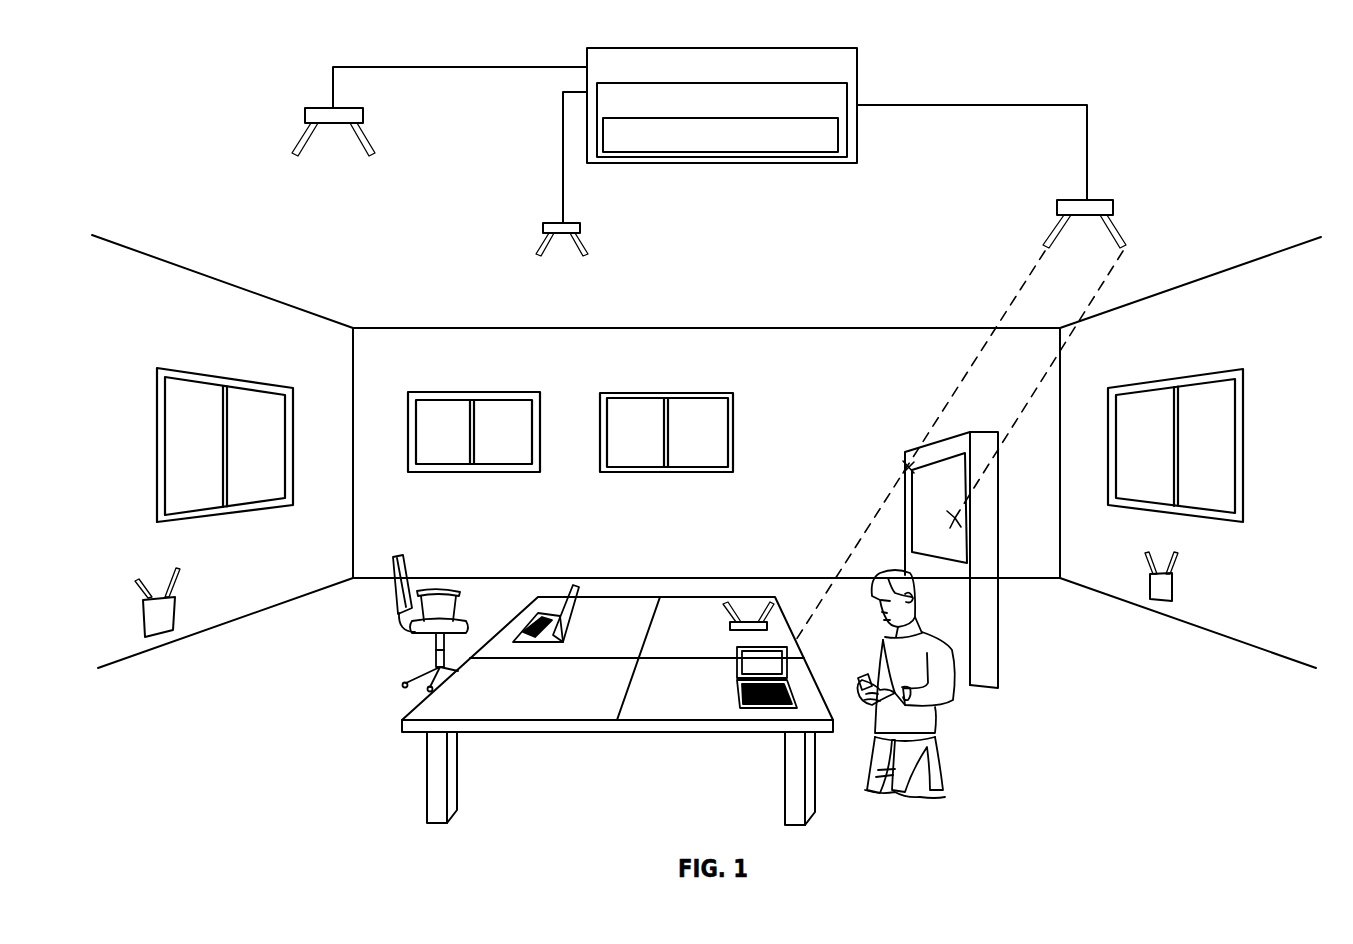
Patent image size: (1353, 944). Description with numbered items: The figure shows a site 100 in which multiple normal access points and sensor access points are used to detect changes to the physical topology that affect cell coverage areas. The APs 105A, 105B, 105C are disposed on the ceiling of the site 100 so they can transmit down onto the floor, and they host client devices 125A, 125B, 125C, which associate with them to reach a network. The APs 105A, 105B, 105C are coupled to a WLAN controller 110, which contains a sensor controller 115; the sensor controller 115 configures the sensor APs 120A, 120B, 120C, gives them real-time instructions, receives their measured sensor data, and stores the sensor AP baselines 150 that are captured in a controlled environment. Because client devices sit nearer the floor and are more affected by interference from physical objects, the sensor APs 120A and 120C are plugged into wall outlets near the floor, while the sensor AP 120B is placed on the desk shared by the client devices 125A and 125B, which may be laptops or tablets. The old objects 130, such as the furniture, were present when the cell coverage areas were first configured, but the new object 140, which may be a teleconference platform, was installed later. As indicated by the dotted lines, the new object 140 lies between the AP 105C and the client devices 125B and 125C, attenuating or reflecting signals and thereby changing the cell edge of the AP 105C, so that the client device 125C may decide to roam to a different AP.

The site 100 is at (277, 72).
The AP 105A is at (353, 105).
The AP 105B is at (571, 221).
The AP 105C is at (1102, 200).
The WLAN controller 110 is at (857, 55).
The sensor controller 115 is at (847, 95).
The sensor AP baselines 150 is at (838, 142).
The sensor AP 120A is at (160, 632).
The sensor AP 120B is at (733, 600).
The sensor AP 120C is at (1161, 601).
The client device 125A is at (573, 590).
The client device 125B is at (738, 690).
The client device 125C is at (860, 678).
The old objects 130 is at (545, 607).
The new object 140 is at (920, 443).